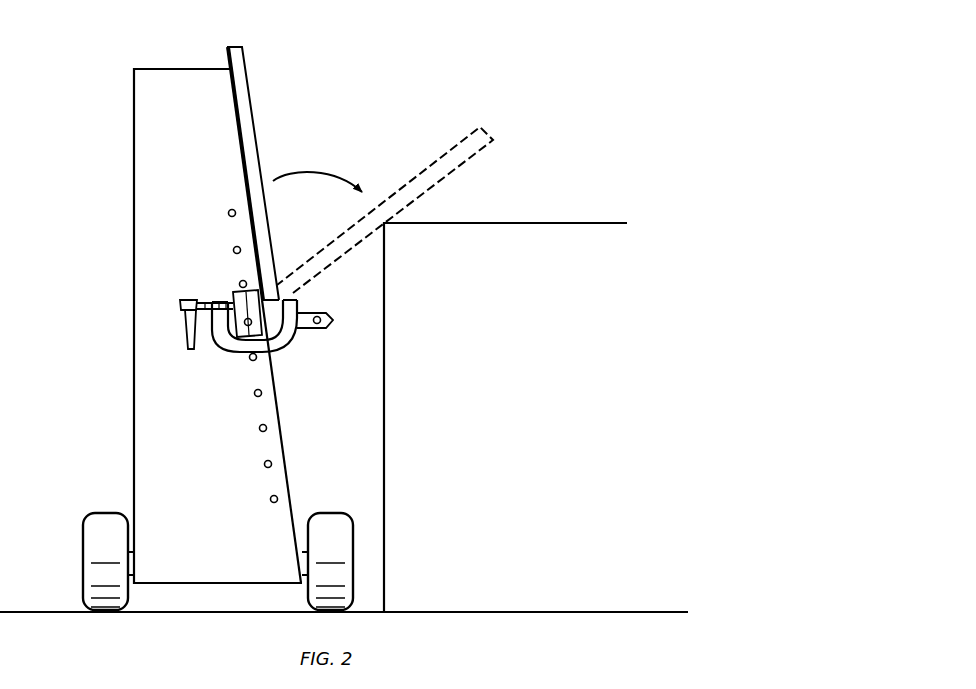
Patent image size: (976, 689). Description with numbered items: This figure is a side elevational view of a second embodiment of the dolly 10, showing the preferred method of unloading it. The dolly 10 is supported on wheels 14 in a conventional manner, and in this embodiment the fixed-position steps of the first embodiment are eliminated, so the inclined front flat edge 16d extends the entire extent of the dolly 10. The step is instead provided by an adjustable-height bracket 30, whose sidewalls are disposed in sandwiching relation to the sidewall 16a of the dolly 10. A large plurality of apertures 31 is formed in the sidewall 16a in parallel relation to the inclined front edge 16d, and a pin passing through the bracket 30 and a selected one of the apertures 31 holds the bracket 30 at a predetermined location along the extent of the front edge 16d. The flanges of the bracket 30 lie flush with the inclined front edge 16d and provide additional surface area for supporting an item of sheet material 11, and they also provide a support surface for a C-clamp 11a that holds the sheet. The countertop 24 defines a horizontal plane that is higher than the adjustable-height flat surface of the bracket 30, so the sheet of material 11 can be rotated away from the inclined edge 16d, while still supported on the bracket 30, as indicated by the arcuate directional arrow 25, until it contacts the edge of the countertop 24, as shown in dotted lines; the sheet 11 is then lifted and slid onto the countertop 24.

The dolly 10 is at (74, 100).
The item of sheet material 11 is at (252, 110).
The C-clamp 11a is at (219, 348).
The wheels 14 is at (83, 546).
The sidewall 16a is at (218, 510).
The inclined front flat edge 16d is at (276, 412).
The countertop 24 is at (529, 223).
The arcuate directional arrow 25 is at (312, 173).
The adjustable-height bracket 30 is at (330, 335).
The apertures 31 is at (229, 212).